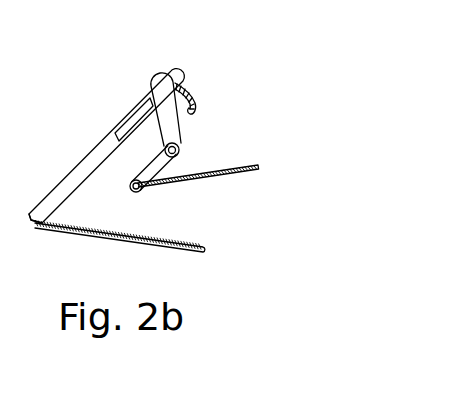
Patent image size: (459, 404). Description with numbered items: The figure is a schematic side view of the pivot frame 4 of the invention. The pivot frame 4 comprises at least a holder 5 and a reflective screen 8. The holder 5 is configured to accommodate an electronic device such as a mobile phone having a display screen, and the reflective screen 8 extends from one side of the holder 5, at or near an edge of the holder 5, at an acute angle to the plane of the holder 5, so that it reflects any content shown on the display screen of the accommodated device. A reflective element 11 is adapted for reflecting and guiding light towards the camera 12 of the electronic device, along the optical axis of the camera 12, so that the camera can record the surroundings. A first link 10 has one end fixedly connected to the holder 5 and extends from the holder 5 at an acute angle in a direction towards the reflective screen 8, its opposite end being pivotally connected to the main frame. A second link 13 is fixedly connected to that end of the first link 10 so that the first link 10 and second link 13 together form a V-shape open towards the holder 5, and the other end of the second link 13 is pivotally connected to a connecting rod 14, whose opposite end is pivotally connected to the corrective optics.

The pivot frame 4 is at (243, 118).
The holder 5 is at (85, 162).
The reflective screen 8 is at (110, 238).
The first link 10 is at (160, 117).
The reflective element 11 is at (193, 98).
The camera 12 is at (152, 76).
The second link 13 is at (162, 167).
The connecting rod 14 is at (200, 178).